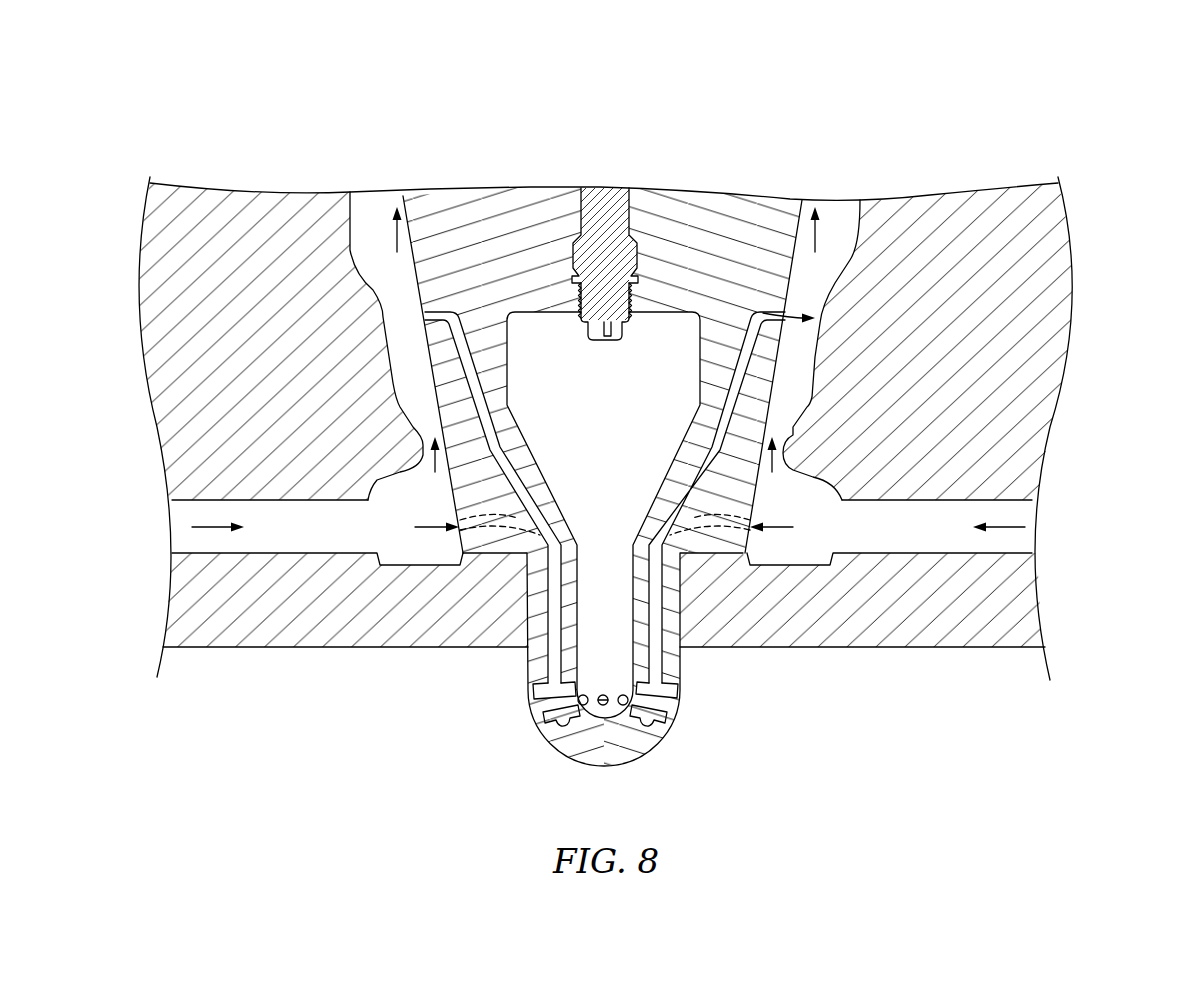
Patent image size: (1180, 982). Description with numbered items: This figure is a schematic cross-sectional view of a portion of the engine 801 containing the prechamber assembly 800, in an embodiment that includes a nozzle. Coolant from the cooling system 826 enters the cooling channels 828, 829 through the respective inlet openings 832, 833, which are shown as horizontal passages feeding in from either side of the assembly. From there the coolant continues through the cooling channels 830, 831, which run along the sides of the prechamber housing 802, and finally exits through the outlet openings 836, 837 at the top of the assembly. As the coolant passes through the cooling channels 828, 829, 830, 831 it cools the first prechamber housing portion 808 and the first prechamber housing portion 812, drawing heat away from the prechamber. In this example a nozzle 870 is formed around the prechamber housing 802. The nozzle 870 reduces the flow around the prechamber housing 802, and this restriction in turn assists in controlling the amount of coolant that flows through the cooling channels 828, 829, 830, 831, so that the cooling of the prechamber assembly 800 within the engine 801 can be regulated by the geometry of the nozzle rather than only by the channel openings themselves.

The prechamber assembly 800 is at (696, 174).
The engine 801 is at (1068, 112).
The prechamber housing 802 is at (812, 270).
The first prechamber housing portion 808 is at (500, 326).
The first prechamber housing portion 812 is at (558, 609).
The cooling system 826 is at (810, 298).
The cooling channel 828 is at (733, 527).
The cooling channel 829 is at (478, 528).
The cooling channel 830 is at (766, 311).
The cooling channel 831 is at (447, 308).
The inlet opening 832 is at (780, 543).
The inlet opening 833 is at (450, 533).
The outlet opening 836 is at (797, 315).
The outlet opening 837 is at (423, 310).
The nozzle 870 is at (789, 474).